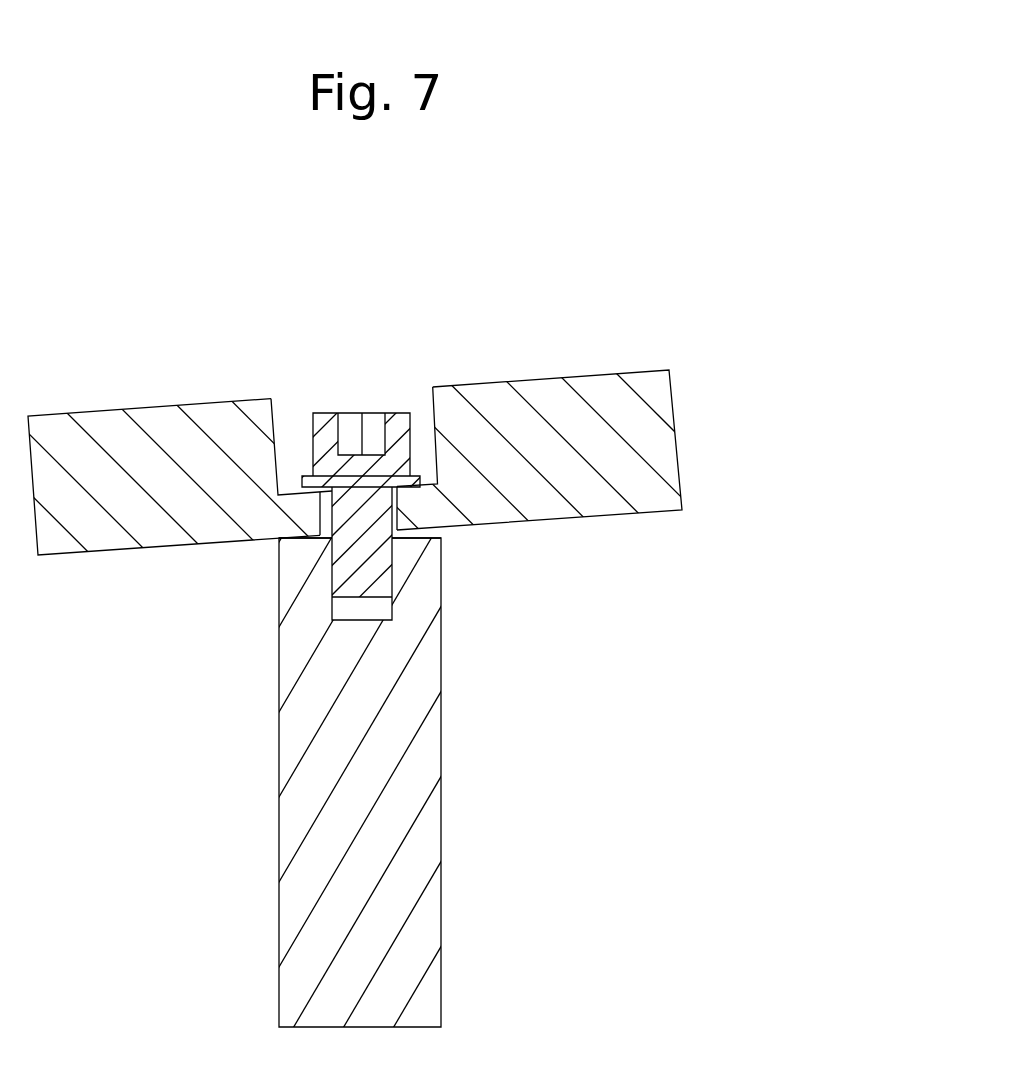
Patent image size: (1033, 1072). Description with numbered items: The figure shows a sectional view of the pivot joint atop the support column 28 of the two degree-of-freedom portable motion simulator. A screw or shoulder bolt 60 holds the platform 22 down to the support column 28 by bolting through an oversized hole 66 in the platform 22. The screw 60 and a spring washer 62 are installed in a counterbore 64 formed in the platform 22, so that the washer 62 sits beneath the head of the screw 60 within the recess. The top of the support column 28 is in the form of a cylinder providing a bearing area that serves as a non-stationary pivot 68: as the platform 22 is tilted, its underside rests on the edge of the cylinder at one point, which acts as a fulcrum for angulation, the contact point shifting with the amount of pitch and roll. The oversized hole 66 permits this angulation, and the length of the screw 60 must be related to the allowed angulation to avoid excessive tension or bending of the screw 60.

The platform 22 is at (675, 433).
The support column 28 is at (440, 887).
The screw or shoulder bolt 60 is at (399, 414).
The spring washer 62 is at (302, 476).
The counterbore 64 is at (284, 396).
The oversized hole 66 is at (322, 530).
The non-stationary pivot 68 is at (442, 540).